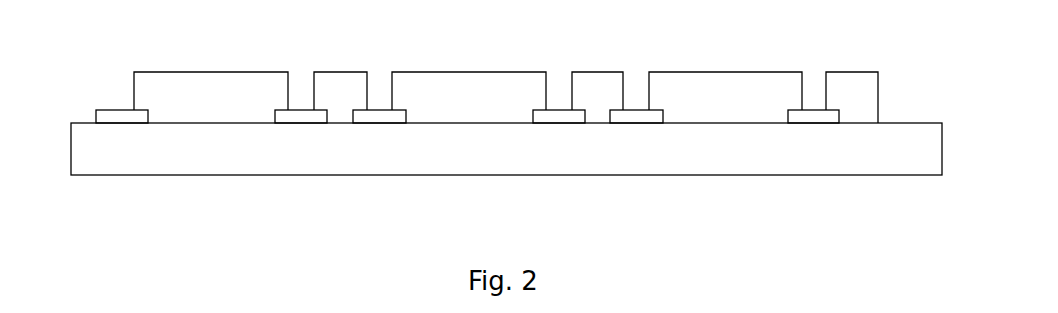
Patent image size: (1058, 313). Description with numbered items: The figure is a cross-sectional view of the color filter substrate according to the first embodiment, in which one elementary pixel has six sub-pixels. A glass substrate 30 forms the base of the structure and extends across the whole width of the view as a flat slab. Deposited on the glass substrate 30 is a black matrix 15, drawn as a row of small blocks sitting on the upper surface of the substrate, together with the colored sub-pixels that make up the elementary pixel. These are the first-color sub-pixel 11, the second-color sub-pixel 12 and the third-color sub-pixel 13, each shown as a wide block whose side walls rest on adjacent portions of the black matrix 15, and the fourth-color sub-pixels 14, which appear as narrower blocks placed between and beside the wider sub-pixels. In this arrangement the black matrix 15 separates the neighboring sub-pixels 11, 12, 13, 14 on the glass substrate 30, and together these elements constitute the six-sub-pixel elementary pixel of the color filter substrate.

The first-color sub-pixel 11 is at (167, 82).
The second-color sub-pixel 12 is at (450, 83).
The third-color sub-pixel 13 is at (699, 85).
The fourth-color sub-pixel 14 is at (323, 93).
The black matrix 15 is at (122, 116).
The glass substrate 30 is at (200, 160).